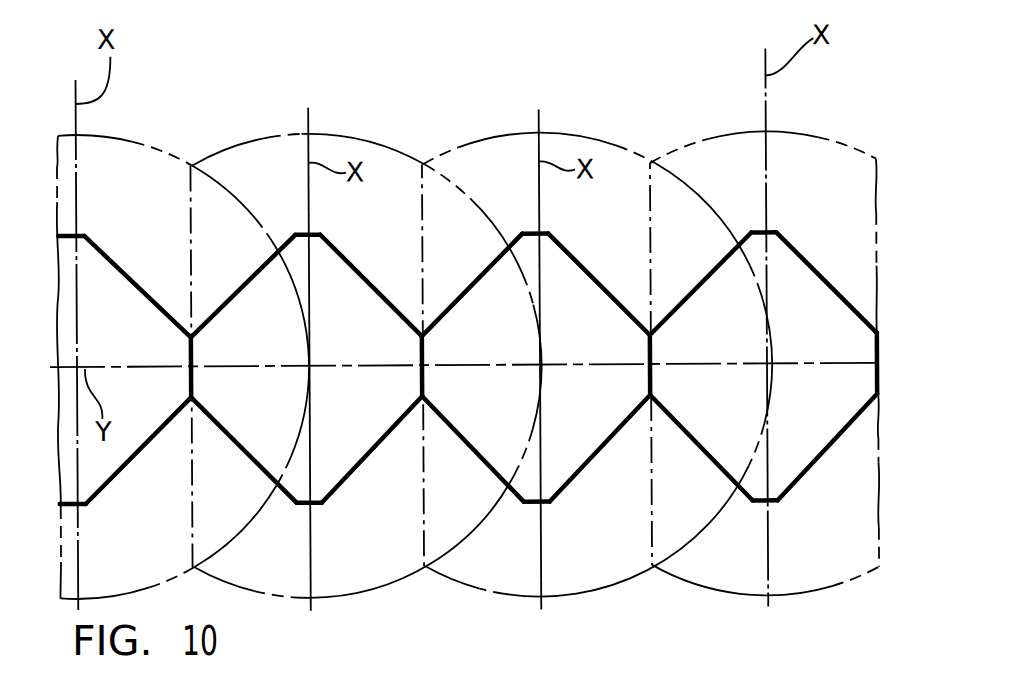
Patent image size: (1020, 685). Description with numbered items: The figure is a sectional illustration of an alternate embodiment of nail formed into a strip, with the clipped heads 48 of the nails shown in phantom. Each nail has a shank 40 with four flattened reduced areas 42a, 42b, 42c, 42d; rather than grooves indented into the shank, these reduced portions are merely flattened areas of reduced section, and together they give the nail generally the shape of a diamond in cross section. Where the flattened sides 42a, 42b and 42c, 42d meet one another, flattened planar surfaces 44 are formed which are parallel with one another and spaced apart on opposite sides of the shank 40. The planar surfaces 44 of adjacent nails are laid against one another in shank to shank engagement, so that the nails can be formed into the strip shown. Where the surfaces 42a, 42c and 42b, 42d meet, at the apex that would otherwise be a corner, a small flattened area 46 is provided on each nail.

The shank 40 is at (288, 353).
The flattened reduced area 42a is at (368, 281).
The flattened reduced area 42b is at (362, 459).
The flattened reduced area 42c is at (482, 276).
The flattened reduced area 42d is at (487, 461).
The flattened planar surface 44 is at (423, 383).
The small flattened area 46 is at (308, 234).
The clipped head 48 is at (315, 132).